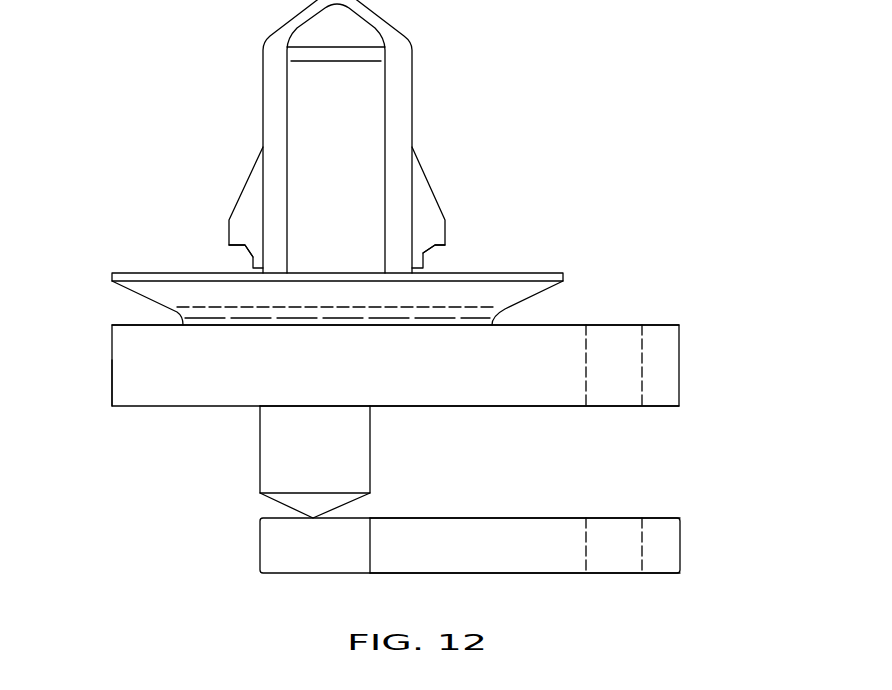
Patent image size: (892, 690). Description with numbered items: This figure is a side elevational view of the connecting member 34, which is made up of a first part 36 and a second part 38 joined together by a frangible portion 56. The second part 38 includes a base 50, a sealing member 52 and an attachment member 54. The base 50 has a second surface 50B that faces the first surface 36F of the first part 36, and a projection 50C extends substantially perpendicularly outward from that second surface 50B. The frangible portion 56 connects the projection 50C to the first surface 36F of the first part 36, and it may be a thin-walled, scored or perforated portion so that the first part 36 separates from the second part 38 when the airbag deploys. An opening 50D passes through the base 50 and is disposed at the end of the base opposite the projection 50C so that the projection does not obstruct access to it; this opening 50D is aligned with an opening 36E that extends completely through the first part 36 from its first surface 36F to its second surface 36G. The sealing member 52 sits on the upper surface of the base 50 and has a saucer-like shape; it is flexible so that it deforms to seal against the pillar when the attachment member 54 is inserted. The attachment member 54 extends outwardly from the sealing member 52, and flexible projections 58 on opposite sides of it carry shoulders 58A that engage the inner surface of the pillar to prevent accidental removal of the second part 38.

The connecting member 34 is at (110, 385).
The first part 36 is at (660, 518).
The opening 36E is at (642, 545).
The first surface 36F is at (524, 517).
The second surface 36G is at (497, 574).
The second part 38 is at (659, 325).
The base 50 is at (679, 385).
The second surface 50B is at (500, 408).
The projection 50C is at (260, 457).
The opening 50D is at (644, 364).
The sealing member 52 is at (563, 276).
The attachment member 54 is at (262, 88).
The frangible portion 56 is at (275, 517).
The projections 58 is at (243, 190).
The shoulders 58A is at (240, 251).